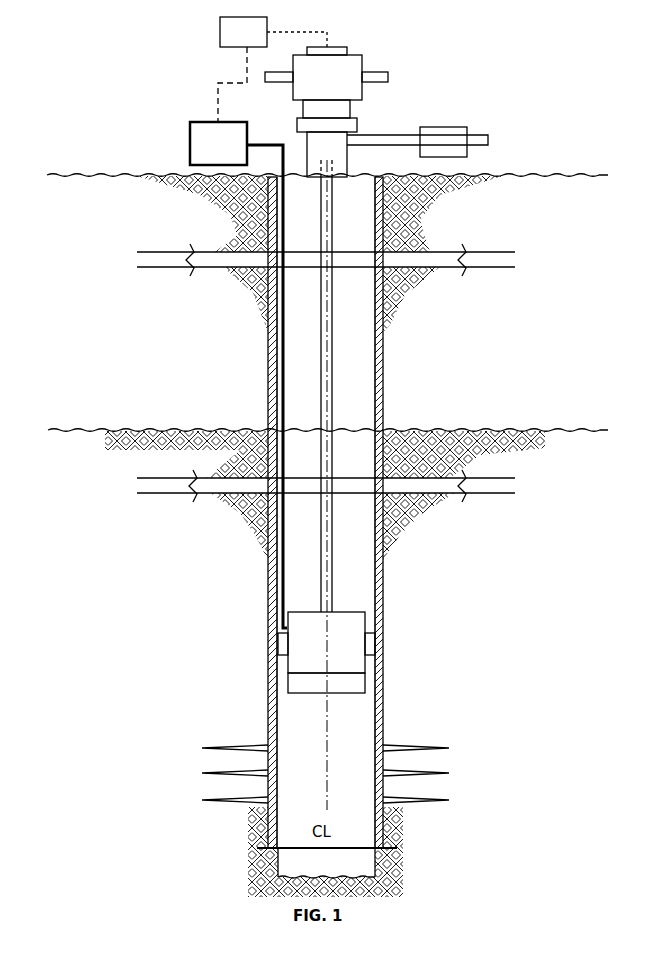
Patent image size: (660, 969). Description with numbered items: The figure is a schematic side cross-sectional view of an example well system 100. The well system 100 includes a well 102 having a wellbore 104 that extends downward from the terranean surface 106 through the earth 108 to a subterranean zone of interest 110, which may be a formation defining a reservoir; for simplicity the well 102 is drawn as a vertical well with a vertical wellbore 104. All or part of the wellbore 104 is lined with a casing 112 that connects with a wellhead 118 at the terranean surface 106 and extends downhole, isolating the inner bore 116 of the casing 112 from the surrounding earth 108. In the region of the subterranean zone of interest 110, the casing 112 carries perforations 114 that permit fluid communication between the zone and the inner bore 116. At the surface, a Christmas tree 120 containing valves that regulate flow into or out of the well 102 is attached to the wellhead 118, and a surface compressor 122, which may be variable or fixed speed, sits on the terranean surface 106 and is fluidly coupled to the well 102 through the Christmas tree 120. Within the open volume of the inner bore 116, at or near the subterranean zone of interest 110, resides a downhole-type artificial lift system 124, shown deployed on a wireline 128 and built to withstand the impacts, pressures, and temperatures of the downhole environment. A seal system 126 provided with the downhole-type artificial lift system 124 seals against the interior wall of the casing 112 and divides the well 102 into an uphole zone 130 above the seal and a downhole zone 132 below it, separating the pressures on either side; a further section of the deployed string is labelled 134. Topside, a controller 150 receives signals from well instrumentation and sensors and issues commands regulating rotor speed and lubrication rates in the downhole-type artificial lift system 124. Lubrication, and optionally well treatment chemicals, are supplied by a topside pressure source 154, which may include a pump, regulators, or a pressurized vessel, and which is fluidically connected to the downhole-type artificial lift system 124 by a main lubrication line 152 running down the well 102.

The well system 100 is at (145, 31).
The well 102 is at (432, 217).
The wellbore 104 is at (280, 360).
The terranean surface 106 is at (83, 173).
The earth 108 is at (587, 344).
The subterranean zone of interest 110 is at (564, 532).
The casing 112 is at (268, 340).
The perforations 114 is at (196, 791).
The inner bore 116 is at (385, 325).
The wellhead 118 is at (278, 117).
The Christmas tree 120 is at (370, 58).
The surface compressor 122 is at (445, 127).
The downhole-type artificial lift system 124 is at (305, 606).
The seal system 126 is at (283, 658).
The wireline 128 is at (320, 367).
The uphole zone 130 is at (360, 577).
The downhole zone 132 is at (361, 729).
The tubing section 134 is at (314, 512).
The controller 150 is at (218, 32).
The main lubrication line 152 is at (281, 294).
The topside pressure source 154 is at (190, 145).